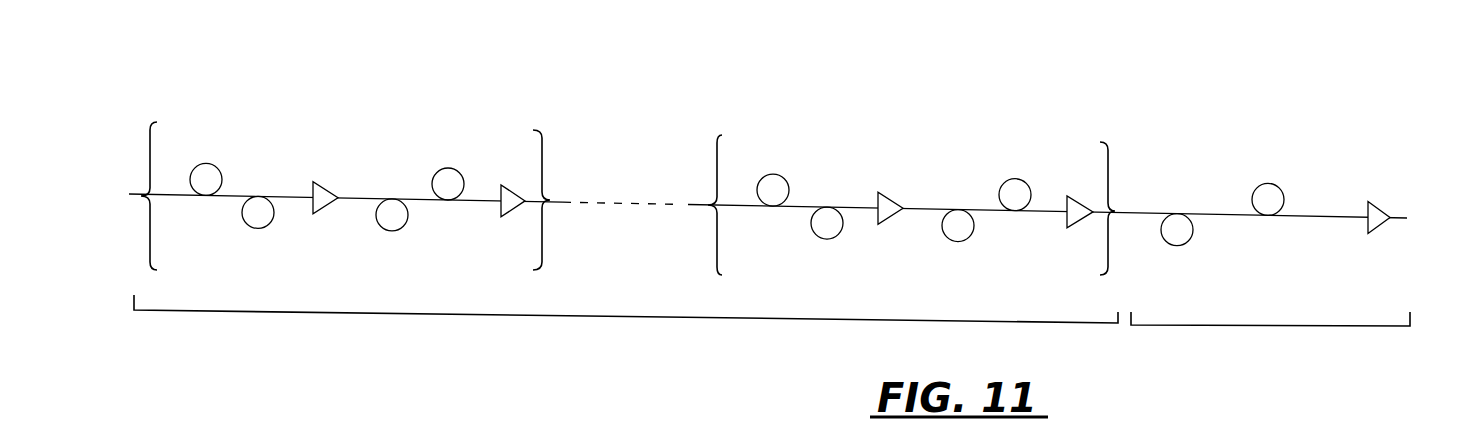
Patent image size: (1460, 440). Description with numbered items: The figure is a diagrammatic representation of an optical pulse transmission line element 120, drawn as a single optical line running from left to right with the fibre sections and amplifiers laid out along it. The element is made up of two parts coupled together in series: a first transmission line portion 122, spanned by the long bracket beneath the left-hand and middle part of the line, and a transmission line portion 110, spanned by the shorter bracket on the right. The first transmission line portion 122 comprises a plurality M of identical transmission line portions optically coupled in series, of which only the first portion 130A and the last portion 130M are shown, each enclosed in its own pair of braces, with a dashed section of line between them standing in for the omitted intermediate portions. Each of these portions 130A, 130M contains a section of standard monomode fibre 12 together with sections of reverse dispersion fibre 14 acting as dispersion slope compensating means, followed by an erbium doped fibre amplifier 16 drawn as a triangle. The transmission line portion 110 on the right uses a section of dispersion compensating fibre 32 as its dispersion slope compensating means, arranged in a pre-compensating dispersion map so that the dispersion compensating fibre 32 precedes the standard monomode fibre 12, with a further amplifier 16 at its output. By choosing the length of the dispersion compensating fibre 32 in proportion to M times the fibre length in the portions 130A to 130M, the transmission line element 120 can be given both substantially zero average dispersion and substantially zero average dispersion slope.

The standard monomode fibre 12 is at (206, 170).
The reverse dispersion fibre 14 is at (258, 218).
The erbium doped fibre amplifier 16 is at (325, 186).
The dispersion compensating fibre 32 is at (1180, 232).
The transmission line portion 110 is at (1277, 326).
The transmission line element 120 is at (783, 70).
The first transmission line portion 122 is at (690, 318).
The first transmission line portion of the series 130A is at (378, 122).
The last transmission line portion of the series 130M is at (979, 147).